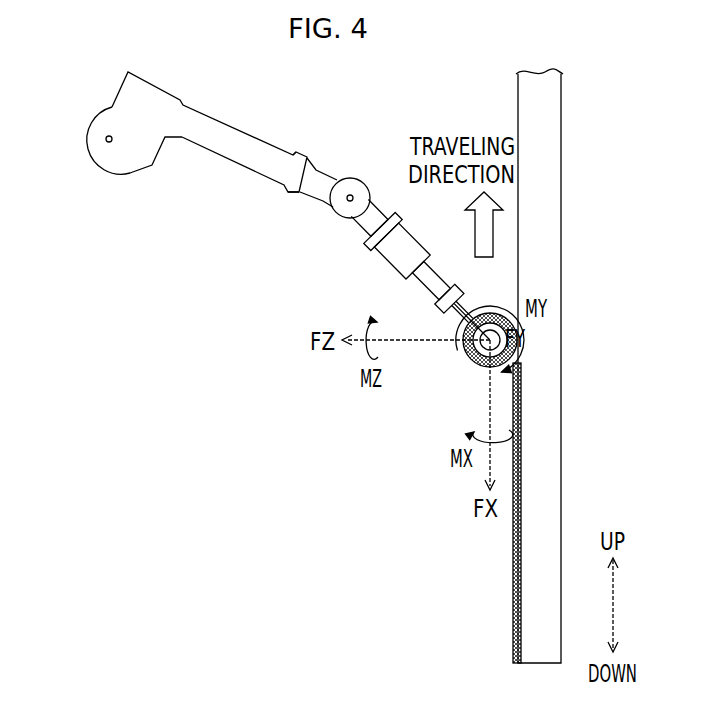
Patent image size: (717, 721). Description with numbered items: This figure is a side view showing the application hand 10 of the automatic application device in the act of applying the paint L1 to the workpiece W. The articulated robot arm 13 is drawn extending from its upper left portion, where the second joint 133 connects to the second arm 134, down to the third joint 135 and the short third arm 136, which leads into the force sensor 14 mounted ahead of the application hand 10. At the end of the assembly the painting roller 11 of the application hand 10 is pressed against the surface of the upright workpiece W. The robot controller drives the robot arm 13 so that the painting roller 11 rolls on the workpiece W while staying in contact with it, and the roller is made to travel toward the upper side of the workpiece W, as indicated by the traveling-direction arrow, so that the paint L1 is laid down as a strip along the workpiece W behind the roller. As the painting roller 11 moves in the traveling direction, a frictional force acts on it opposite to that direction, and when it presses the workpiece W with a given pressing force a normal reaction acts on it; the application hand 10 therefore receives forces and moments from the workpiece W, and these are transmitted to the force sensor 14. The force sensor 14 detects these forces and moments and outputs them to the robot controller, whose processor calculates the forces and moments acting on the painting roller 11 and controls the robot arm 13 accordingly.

The application hand 10 is at (338, 382).
The painting roller 11 is at (465, 360).
The robot arm 13 is at (90, 112).
The second joint 133 is at (93, 160).
The second arm 134 is at (232, 137).
The third joint 135 is at (353, 182).
The third arm 136 is at (362, 222).
The force sensor 14 is at (377, 247).
The workpiece W is at (557, 160).
The paint L1 is at (513, 635).